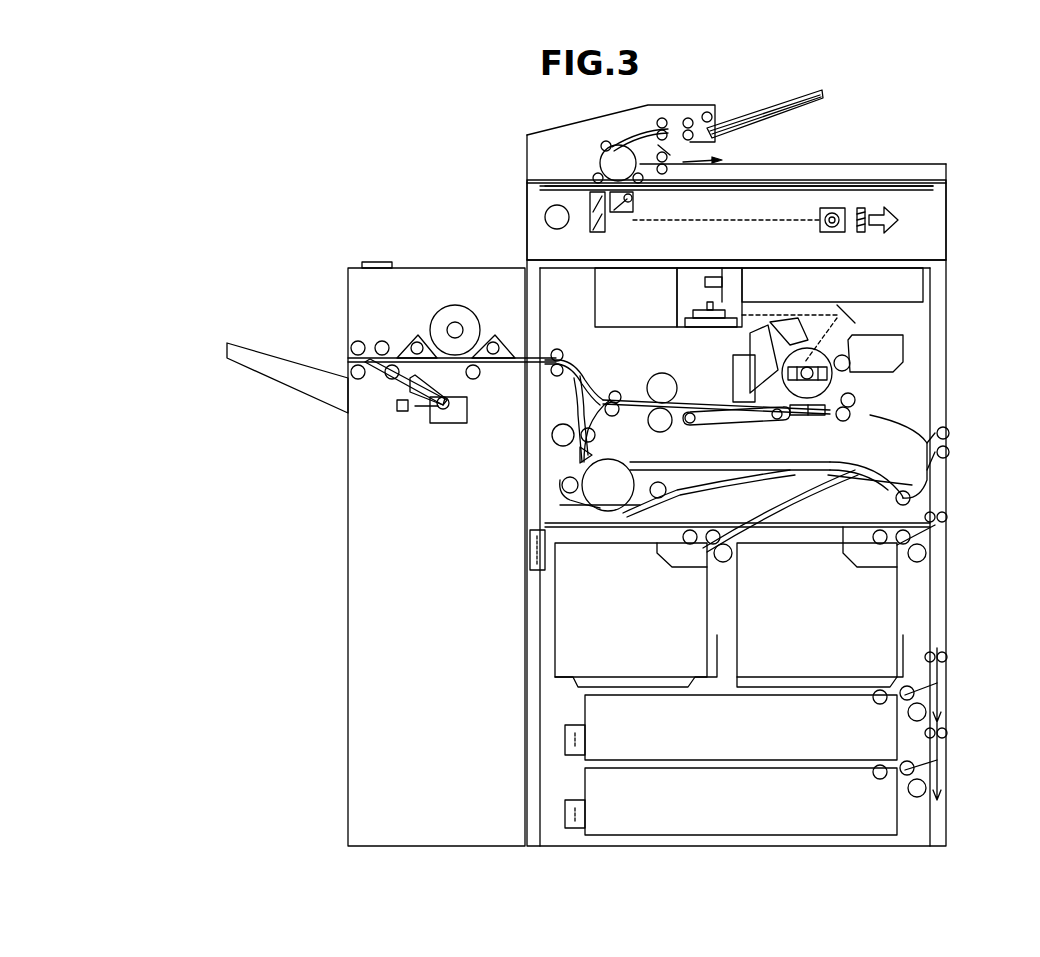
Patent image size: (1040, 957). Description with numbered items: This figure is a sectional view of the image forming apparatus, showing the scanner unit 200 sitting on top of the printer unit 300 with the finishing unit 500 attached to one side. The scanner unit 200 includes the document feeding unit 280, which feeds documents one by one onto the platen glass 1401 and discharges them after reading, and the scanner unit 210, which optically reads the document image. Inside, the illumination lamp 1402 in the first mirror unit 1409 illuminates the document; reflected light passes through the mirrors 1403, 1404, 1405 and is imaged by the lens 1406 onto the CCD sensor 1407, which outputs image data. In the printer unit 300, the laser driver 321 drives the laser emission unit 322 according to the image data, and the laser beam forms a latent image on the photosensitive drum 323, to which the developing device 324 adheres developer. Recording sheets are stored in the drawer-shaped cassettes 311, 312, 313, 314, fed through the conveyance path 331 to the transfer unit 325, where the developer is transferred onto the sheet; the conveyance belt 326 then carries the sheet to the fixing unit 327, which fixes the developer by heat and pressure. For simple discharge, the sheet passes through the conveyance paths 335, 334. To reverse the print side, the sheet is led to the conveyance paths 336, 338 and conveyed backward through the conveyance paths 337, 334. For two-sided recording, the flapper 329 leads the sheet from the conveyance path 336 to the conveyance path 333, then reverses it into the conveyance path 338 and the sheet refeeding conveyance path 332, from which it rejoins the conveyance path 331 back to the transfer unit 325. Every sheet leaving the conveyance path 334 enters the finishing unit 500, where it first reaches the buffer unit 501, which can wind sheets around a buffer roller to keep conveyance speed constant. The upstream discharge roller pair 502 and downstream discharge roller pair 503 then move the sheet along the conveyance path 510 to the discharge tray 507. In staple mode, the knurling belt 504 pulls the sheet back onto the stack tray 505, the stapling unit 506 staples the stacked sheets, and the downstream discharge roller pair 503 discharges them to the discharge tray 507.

The scanner unit 200 is at (965, 165).
The scanner unit 210 is at (527, 222).
The document feeding unit 280 is at (793, 164).
The printer unit 300 is at (965, 262).
The cassette 311 is at (897, 607).
The cassette 312 is at (545, 602).
The cassette 313 is at (555, 712).
The cassette 314 is at (570, 780).
The laser driver 321 is at (595, 305).
The laser emission unit 322 is at (710, 327).
The photosensitive drum 323 is at (782, 383).
The developing device 324 is at (868, 333).
The transfer unit 325 is at (815, 417).
The conveyance belt 326 is at (757, 420).
The fixing unit 327 is at (662, 373).
The flapper 329 is at (577, 455).
The conveyance path 331 is at (895, 420).
The sheet refeeding conveyance path 332 is at (672, 492).
The conveyance path 333 is at (677, 468).
The conveyance path 334 is at (530, 356).
The conveyance path 335 is at (595, 380).
The conveyance path 336 is at (597, 440).
The conveyance path 337 is at (552, 437).
The conveyance path 338 is at (560, 485).
The finishing unit 500 is at (215, 262).
The buffer unit 501 is at (455, 305).
The upstream discharge roller pair 502 is at (382, 341).
The downstream discharge roller pair 503 is at (358, 340).
The knurling belt 504 is at (382, 395).
The stack tray 505 is at (390, 415).
The stapling unit 506 is at (445, 423).
The discharge tray 507 is at (278, 383).
The conveyance path 510 is at (350, 364).
The platen glass 1401 is at (547, 195).
The illumination lamp 1402 is at (636, 199).
The mirror 1403 is at (645, 203).
The mirror 1404 is at (592, 187).
The mirror 1405 is at (598, 232).
The lens 1406 is at (830, 232).
The CCD sensor 1407 is at (862, 208).
The first mirror unit 1409 is at (620, 215).